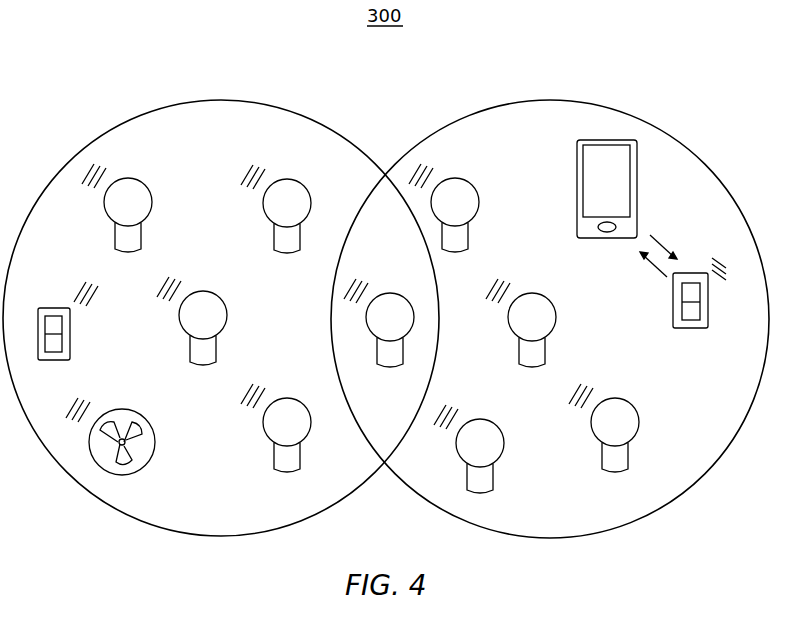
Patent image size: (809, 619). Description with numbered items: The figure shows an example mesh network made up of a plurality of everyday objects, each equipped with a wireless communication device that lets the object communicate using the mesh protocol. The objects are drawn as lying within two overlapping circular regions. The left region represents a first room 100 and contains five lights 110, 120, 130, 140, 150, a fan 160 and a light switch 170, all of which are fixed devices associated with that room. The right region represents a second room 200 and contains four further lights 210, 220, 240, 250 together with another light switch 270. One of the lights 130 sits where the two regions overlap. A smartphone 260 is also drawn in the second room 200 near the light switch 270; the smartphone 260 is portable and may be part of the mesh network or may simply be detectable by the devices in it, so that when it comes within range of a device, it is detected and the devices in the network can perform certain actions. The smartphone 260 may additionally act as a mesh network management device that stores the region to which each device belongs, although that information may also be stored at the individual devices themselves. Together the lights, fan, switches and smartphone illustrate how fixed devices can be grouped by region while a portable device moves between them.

The first room 100 is at (118, 112).
The second room 200 is at (653, 111).
The light 110 is at (143, 190).
The light 120 is at (303, 192).
The light 130 is at (390, 293).
The light 140 is at (287, 398).
The light 150 is at (220, 304).
The fan 160 is at (156, 442).
The light switch 170 is at (71, 340).
The light 210 is at (630, 408).
The light 220 is at (471, 191).
The light 240 is at (479, 420).
The light 250 is at (550, 305).
The smartphone 260 is at (577, 150).
The light switch 270 is at (674, 318).